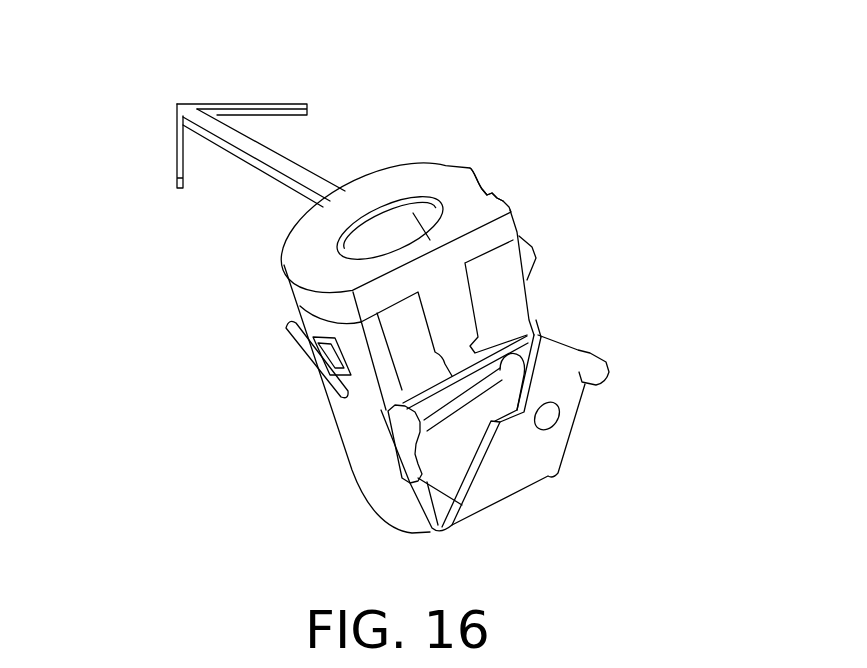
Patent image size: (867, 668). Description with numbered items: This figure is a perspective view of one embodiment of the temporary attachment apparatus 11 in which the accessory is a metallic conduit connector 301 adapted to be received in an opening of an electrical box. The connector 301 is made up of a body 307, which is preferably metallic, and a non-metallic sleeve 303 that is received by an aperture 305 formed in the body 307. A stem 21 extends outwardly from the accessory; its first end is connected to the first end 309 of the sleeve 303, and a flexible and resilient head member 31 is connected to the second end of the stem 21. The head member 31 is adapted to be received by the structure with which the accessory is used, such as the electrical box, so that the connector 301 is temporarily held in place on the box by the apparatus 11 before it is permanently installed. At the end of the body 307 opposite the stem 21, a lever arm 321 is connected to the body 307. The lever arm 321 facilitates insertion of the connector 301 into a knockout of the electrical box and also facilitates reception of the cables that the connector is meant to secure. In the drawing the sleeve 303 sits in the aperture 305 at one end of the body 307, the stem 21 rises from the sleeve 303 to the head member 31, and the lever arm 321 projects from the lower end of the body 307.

The apparatus 11 is at (603, 194).
The stem 21 is at (331, 141).
The flexible and resilient head member 31 is at (146, 156).
The connector 301 is at (304, 429).
The non-metallic sleeve 303 is at (437, 166).
The aperture 305 is at (497, 193).
The body 307 is at (350, 467).
The first end of the sleeve 309 is at (293, 247).
The lever arm 321 is at (574, 320).